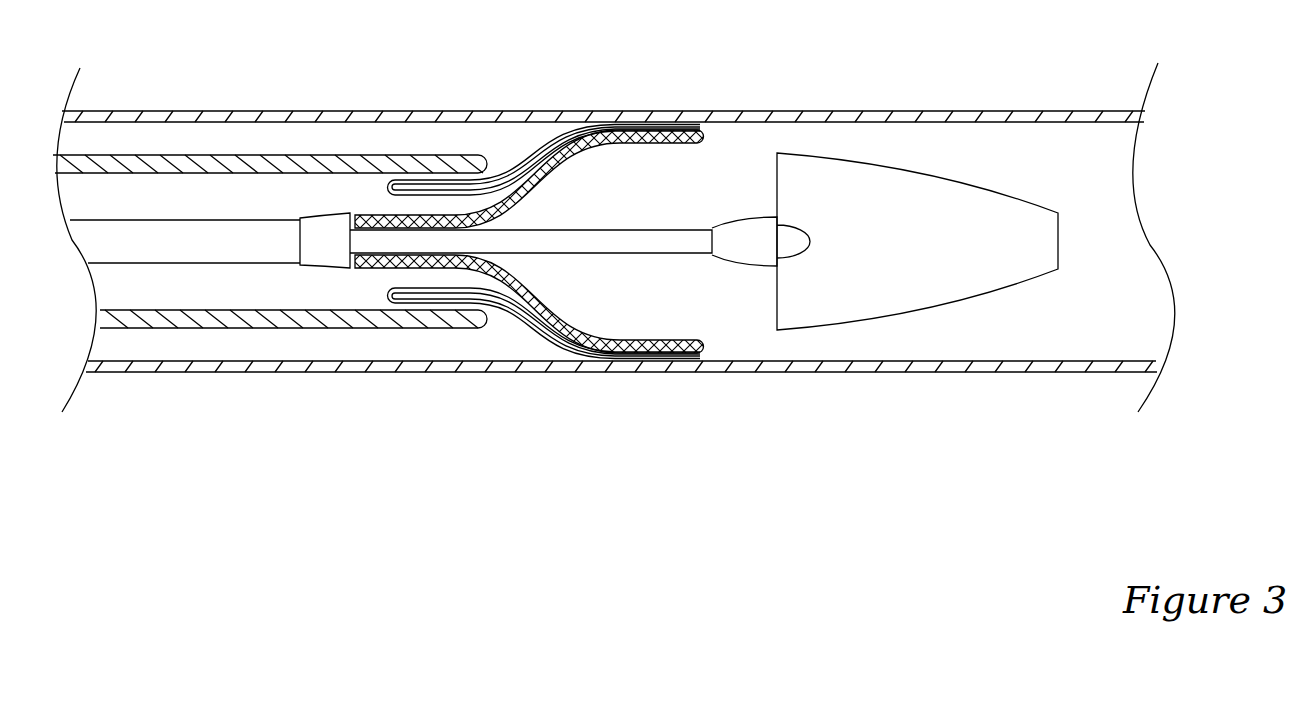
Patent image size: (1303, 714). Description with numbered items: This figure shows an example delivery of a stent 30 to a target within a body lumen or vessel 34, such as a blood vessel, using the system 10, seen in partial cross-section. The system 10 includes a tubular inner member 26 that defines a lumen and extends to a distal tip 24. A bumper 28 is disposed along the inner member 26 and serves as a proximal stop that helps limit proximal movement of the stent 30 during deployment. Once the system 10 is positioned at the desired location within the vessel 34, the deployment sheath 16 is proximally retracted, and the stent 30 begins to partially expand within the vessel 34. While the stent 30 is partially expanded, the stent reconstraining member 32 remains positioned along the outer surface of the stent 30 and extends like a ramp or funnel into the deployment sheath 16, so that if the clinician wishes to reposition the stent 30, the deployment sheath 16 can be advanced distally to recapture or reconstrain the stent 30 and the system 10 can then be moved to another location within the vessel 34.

The system 10 is at (151, 104).
The deployment sheath 16 is at (205, 160).
The distal tip 24 is at (963, 182).
The inner member 26 is at (450, 226).
The bumper 28 is at (338, 217).
The stent 30 is at (380, 262).
The stent reconstraining member 32 is at (569, 135).
The vessel 34 is at (1040, 112).